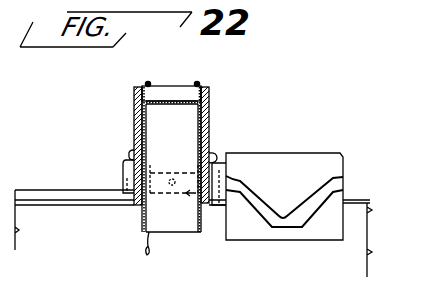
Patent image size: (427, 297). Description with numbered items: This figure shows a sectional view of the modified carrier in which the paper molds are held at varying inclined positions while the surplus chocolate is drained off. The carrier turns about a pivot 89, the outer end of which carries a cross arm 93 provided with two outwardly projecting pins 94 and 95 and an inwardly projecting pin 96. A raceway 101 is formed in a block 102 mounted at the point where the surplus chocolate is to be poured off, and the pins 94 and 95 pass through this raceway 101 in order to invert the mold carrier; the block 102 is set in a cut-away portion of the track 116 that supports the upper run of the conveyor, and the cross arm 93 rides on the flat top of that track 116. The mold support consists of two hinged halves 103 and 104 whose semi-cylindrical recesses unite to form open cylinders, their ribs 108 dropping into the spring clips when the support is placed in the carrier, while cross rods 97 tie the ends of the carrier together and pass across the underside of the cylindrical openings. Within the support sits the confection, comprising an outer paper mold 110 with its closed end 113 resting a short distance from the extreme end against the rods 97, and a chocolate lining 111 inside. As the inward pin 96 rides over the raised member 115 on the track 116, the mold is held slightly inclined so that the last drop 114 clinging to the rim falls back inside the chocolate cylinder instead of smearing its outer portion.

The pivot 89 is at (174, 172).
The cross arm 93 is at (128, 160).
The outwardly projecting pin 94 is at (134, 178).
The outwardly projecting pin 95 is at (227, 182).
The inwardly projecting pin 96 is at (173, 159).
The cross rods 97 is at (146, 82).
The raceway 101 is at (307, 205).
The block 102 is at (317, 143).
The mold support half 103 is at (209, 118).
The mold support half 104 is at (134, 105).
The ribs 108 is at (131, 152).
The paper mold 110 is at (143, 222).
The chocolate lining 111 is at (172, 115).
The closed end 113 is at (170, 97).
The drop 114 is at (153, 253).
The raised member 115 is at (32, 190).
The track 116 is at (68, 200).